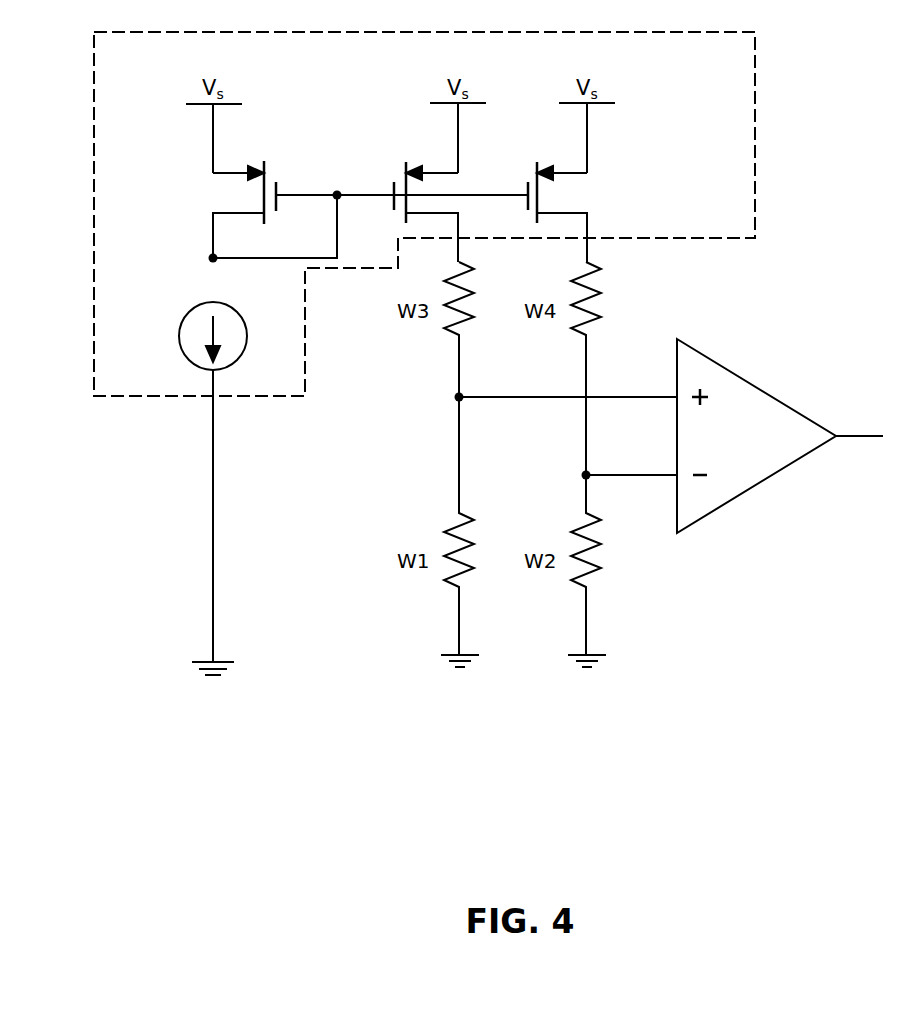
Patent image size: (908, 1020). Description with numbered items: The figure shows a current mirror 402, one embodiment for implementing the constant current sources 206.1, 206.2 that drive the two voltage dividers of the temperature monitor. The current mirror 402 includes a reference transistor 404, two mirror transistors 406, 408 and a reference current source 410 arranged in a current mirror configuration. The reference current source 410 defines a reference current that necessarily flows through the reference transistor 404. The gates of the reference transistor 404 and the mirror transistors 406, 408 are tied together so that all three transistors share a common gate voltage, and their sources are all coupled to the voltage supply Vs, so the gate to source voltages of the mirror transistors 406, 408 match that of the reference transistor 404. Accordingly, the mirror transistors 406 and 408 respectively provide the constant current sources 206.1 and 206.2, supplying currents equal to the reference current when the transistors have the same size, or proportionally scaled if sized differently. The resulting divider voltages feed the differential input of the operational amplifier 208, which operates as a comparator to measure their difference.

The current mirror 402 is at (755, 48).
The reference transistor 404 is at (189, 199).
The mirror transistor 406 is at (392, 185).
The mirror transistor 408 is at (534, 166).
The reference current source 410 is at (181, 308).
The constant current source 206.1 is at (395, 166).
The constant current source 206.2 is at (591, 171).
The operational amplifier 208 is at (758, 385).